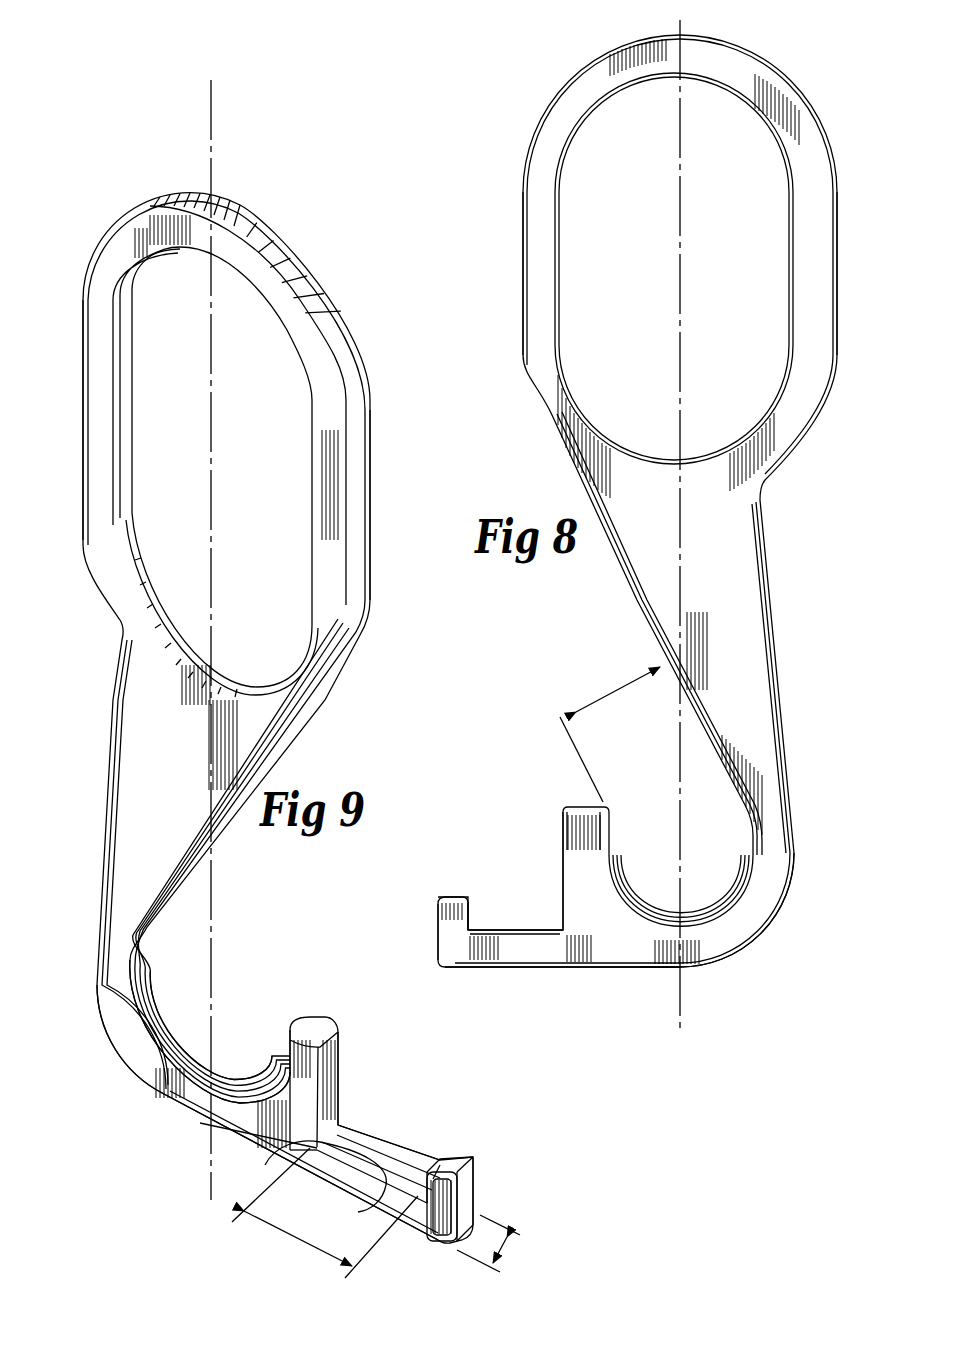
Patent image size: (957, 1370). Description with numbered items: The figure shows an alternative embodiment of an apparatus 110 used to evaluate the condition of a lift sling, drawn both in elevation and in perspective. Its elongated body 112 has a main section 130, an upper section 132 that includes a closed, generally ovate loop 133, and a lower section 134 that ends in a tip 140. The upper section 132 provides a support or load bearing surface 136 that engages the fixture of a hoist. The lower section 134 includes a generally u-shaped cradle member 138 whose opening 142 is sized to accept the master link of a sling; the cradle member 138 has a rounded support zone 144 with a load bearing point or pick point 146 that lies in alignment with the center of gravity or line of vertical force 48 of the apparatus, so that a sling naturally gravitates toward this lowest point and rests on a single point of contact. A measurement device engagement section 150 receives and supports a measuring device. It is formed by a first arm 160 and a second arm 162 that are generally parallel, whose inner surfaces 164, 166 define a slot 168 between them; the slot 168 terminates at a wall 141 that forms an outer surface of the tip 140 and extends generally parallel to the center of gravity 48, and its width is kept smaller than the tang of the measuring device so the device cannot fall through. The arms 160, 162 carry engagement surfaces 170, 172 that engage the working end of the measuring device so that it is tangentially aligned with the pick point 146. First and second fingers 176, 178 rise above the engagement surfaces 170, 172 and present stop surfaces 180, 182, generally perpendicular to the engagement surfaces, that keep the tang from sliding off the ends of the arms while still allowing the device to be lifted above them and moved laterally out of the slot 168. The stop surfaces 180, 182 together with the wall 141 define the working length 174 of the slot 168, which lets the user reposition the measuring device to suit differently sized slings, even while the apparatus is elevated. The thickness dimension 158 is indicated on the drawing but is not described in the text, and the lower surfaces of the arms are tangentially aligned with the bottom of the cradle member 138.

In FIG. 8, the center of gravity 48 is at (681, 32).
In FIG. 9, the center of gravity 48 is at (211, 97).
In FIG. 8, the apparatus 110 is at (538, 93).
In FIG. 9, the apparatus 110 is at (148, 158).
In FIG. 8, the elongated body 112 is at (819, 106).
In FIG. 9, the elongated body 112 is at (370, 436).
In FIG. 8, the main section 130 is at (630, 594).
In FIG. 9, the main section 130 is at (107, 790).
In FIG. 8, the upper section 132 is at (524, 183).
In FIG. 9, the upper section 132 is at (307, 270).
In FIG. 8, the closed, generally ovate loop 133 is at (566, 179).
In FIG. 9, the closed, generally ovate loop 133 is at (133, 500).
In FIG. 8, the lower section 134 is at (773, 922).
In FIG. 9, the lower section 134 is at (128, 1071).
In FIG. 8, the load bearing surface 136 is at (680, 74).
In FIG. 9, the load bearing surface 136 is at (200, 250).
In FIG. 8, the cradle member 138 is at (710, 963).
In FIG. 9, the cradle member 138 is at (180, 1107).
In FIG. 8, the tip 140 is at (587, 806).
In FIG. 9, the tip 140 is at (305, 1020).
In FIG. 8, the wall 141 is at (563, 842).
In FIG. 9, the wall 141 is at (326, 1050).
In FIG. 8, the opening 142 is at (612, 690).
In FIG. 8, the support zone 144 is at (655, 924).
In FIG. 9, the support zone 144 is at (170, 1050).
In FIG. 8, the pick point 146 is at (693, 924).
In FIG. 9, the pick point 146 is at (213, 1080).
In FIG. 8, the measurement device engagement section 150 is at (499, 972).
In FIG. 9, the measurement device engagement section 150 is at (480, 1193).
In FIG. 9, the base thickness 158 is at (503, 1250).
In FIG. 9, the first arm 160 is at (332, 1152).
In FIG. 8, the second arm 162 is at (503, 944).
In FIG. 9, the second arm 162 is at (343, 1130).
In FIG. 9, the inner surface 164 is at (472, 1232).
In FIG. 9, the inner surface 166 is at (466, 1176).
In FIG. 9, the slot 168 is at (357, 1211).
In FIG. 9, the engagement surface 170 is at (300, 1145).
In FIG. 8, the engagement surface 172 is at (492, 929).
In FIG. 9, the engagement surface 172 is at (373, 1140).
In FIG. 9, the working length 174 is at (290, 1244).
In FIG. 9, the first finger 176 is at (438, 1200).
In FIG. 8, the second finger 178 is at (453, 896).
In FIG. 9, the second finger 178 is at (459, 1158).
In FIG. 9, the stop surface 180 is at (412, 1198).
In FIG. 8, the stop surface 182 is at (470, 928).
In FIG. 9, the stop surface 182 is at (440, 1166).